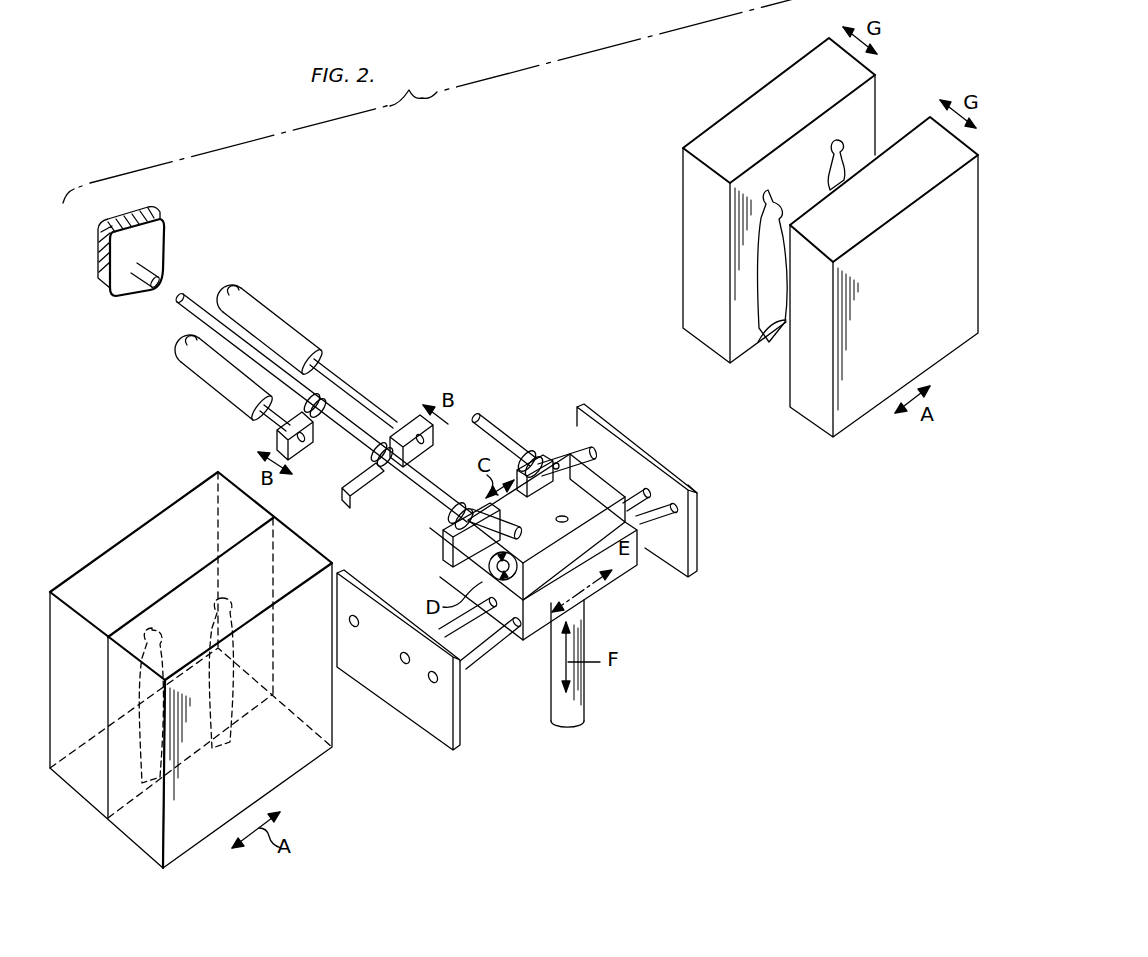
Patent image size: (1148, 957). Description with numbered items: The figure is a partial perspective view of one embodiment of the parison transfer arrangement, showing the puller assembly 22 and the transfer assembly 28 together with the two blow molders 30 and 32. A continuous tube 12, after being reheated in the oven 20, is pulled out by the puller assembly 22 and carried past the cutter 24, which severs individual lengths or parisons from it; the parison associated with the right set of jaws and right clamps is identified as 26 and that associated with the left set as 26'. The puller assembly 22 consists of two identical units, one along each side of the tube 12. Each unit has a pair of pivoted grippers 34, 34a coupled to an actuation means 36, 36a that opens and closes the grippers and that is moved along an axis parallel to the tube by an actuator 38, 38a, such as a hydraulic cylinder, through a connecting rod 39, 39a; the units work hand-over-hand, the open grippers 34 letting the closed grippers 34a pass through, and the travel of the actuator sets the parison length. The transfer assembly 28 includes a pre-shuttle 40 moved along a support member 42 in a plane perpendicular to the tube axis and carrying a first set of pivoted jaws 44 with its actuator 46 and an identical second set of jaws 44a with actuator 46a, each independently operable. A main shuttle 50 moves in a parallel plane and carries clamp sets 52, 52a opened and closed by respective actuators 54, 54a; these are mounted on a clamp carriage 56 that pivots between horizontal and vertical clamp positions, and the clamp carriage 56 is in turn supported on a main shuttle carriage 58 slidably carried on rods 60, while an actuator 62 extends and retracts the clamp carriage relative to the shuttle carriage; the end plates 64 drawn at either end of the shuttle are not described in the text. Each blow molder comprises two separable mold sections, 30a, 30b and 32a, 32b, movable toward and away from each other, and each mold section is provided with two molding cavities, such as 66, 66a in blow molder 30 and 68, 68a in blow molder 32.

The tube 12 is at (140, 284).
The oven 20 is at (162, 228).
The puller assembly 22 is at (318, 258).
The cutter 24 is at (355, 513).
The parison 26 is at (503, 424).
The parison 26' is at (446, 456).
The transfer assembly 28 is at (542, 368).
The blow molder 30 is at (722, 79).
The mold section 30a is at (761, 146).
The mold section 30b is at (860, 232).
The blow molder 32 is at (138, 509).
The mold section 32a is at (165, 576).
The mold section 32b is at (206, 621).
The pivoted grippers 34 is at (378, 442).
The pivoted grippers 34a is at (320, 423).
The actuation means 36 is at (408, 418).
The actuation means 36a is at (276, 438).
The actuator 38 is at (283, 336).
The actuator 38a is at (213, 377).
The connecting rod 39 is at (354, 378).
The connecting rod 39a is at (263, 422).
The pre-shuttle 40 is at (398, 546).
The support member 42 is at (559, 462).
The pivoted jaws 44 is at (544, 462).
The pivoted jaws 44a is at (466, 512).
The actuator 46 is at (521, 458).
The actuator 46a is at (470, 554).
The main shuttle 50 is at (680, 628).
The clamps 52 is at (594, 445).
The clamps 52a is at (437, 556).
The actuator 54 is at (614, 487).
The actuator 54a is at (498, 628).
The clamp carriage 56 is at (692, 482).
The main shuttle carriage 58 is at (624, 572).
The rods 60 is at (472, 626).
The actuator 62 is at (585, 693).
The end plate 64 is at (392, 706).
The molding cavity 66 is at (763, 256).
The molding cavity 66a is at (846, 144).
The molding cavity 68 is at (135, 704).
The molding cavity 68a is at (247, 670).